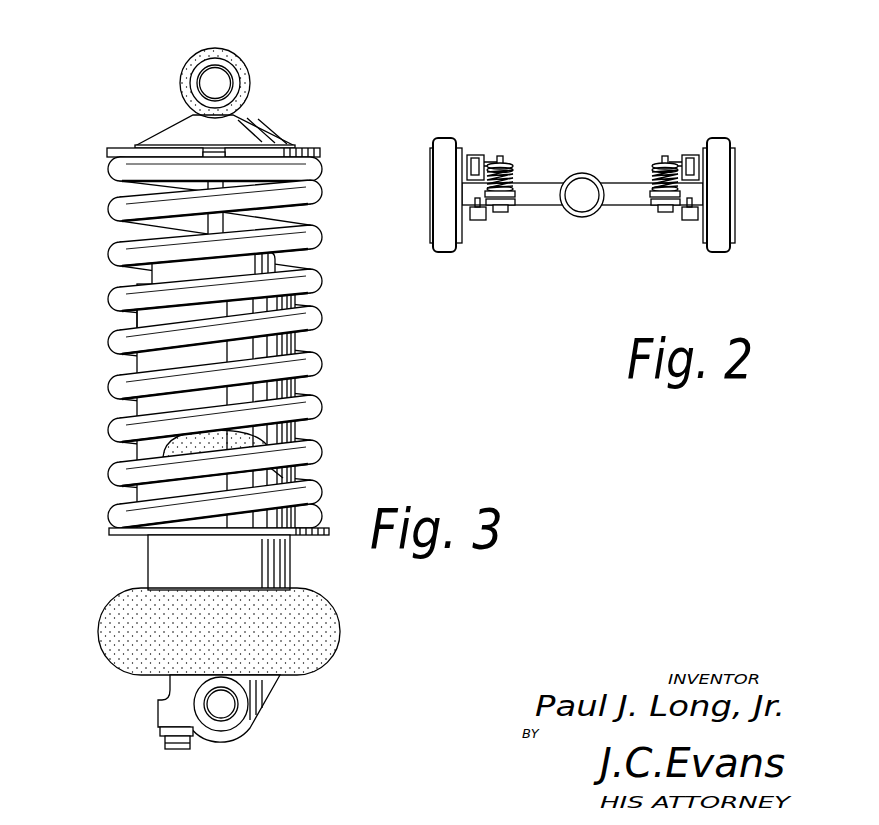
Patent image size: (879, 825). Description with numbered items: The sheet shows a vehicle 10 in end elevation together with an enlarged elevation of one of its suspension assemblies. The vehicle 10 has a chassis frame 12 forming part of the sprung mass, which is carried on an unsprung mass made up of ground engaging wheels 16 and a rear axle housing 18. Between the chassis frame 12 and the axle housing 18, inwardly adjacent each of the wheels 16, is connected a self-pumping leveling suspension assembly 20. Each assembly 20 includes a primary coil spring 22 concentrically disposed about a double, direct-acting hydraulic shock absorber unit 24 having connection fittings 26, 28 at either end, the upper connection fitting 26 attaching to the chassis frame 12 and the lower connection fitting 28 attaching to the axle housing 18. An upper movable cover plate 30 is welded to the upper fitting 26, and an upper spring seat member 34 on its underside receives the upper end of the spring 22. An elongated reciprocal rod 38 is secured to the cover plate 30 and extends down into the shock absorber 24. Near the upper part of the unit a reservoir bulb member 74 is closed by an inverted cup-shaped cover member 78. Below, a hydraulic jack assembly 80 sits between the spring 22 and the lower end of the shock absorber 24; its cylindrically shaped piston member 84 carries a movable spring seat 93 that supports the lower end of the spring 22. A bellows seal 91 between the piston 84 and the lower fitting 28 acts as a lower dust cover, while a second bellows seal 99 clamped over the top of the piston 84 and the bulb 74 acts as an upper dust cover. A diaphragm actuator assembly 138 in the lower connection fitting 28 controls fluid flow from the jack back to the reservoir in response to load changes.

In FIG. 2, the vehicle 10 is at (553, 206).
In FIG. 2, the chassis frame 12 is at (690, 155).
In FIG. 2, the ground engaging wheels 16 is at (445, 145).
In FIG. 2, the rear axle housing 18 is at (598, 185).
In FIG. 3, the self-pumping leveling suspension assembly 20 is at (167, 128).
In FIG. 2, the self-pumping leveling suspension assembly 20 is at (575, 183).
In FIG. 3, the primary coil spring 22 is at (197, 342).
In FIG. 2, the primary coil spring 22 is at (512, 182).
In FIG. 3, the double, direct-acting hydraulic shock absorber unit 24 is at (142, 361).
In FIG. 3, the upper connection fitting 26 is at (234, 63).
In FIG. 2, the upper connection fitting 26 is at (498, 158).
In FIG. 3, the lower connection fitting 28 is at (247, 727).
In FIG. 2, the lower connection fitting 28 is at (500, 214).
In FIG. 3, the upper movable cover plate 30 is at (255, 138).
In FIG. 3, the upper spring seat member 34 is at (108, 150).
In FIG. 3, the elongated reciprocal rod 38 is at (220, 221).
In FIG. 3, the reservoir bulb member 74 is at (142, 314).
In FIG. 3, the inverted cup-shaped cover member 78 is at (272, 262).
In FIG. 3, the hydraulic jack assembly 80 is at (150, 548).
In FIG. 3, the cylindrically shaped piston member 84 is at (150, 570).
In FIG. 3, the bellows seal 91 is at (118, 666).
In FIG. 3, the movable spring seat 93 is at (302, 536).
In FIG. 3, the bellows seal 99 is at (165, 449).
In FIG. 3, the diaphragm actuator assembly 138 is at (160, 734).